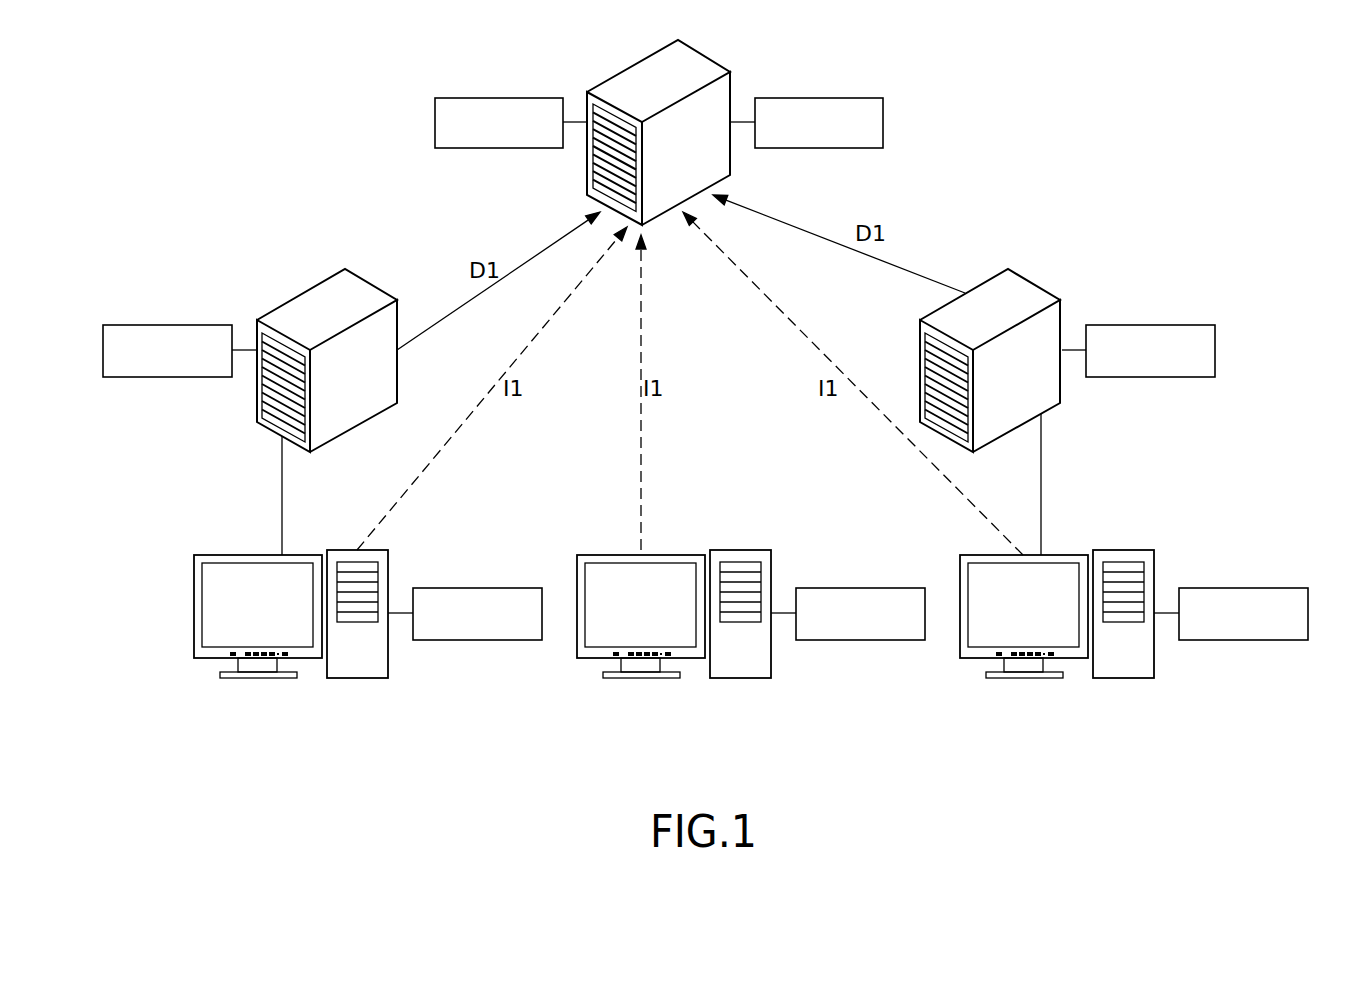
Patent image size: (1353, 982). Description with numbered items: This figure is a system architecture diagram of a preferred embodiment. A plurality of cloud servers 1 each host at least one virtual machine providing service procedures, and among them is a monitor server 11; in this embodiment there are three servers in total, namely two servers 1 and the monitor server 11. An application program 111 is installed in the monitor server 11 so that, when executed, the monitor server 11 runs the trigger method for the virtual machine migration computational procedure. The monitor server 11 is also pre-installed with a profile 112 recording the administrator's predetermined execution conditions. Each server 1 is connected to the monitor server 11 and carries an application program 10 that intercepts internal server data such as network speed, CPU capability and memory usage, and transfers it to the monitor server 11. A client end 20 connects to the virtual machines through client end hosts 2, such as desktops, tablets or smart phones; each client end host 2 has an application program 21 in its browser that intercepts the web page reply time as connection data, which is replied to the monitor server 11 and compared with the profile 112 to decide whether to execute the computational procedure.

The monitor server 11 is at (645, 66).
The application program 111 is at (820, 100).
The profile 112 is at (498, 101).
The server 1 is at (313, 297).
The application program 10 is at (166, 325).
The client end host 2 is at (382, 655).
The application program 21 is at (478, 590).
The client end 20 is at (760, 663).